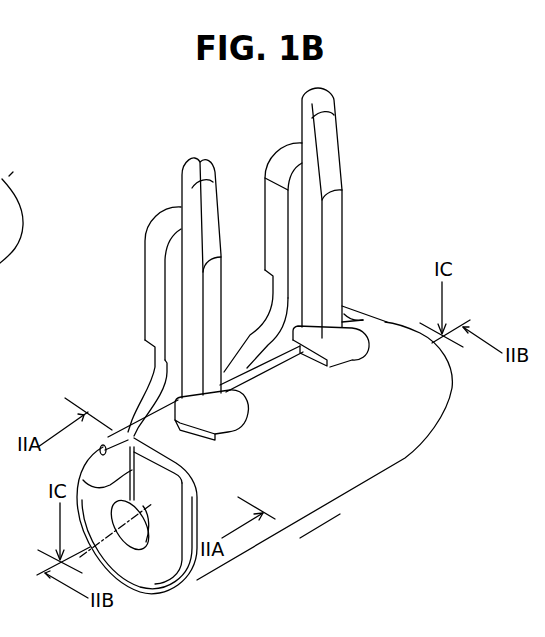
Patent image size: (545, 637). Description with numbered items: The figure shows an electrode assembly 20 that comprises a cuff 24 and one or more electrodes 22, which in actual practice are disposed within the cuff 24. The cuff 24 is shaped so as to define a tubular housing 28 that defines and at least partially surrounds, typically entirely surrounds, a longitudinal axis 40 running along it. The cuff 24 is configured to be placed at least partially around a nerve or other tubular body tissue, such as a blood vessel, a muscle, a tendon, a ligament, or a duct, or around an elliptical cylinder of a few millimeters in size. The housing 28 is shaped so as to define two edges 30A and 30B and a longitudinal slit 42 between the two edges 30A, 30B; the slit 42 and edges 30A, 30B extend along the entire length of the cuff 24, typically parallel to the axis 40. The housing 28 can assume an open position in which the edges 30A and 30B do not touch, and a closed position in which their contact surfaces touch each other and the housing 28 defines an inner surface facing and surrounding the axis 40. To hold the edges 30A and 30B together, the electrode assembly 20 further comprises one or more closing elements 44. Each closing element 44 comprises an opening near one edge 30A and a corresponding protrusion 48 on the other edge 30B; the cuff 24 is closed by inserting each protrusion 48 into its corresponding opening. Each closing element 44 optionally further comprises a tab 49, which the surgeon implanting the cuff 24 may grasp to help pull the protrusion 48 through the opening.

The electrode assembly 20 is at (131, 256).
The electrodes 22 is at (3, 295).
The cuff 24 is at (296, 540).
The tubular housing 28 is at (345, 488).
The edge 30A is at (117, 421).
The edge 30B is at (200, 468).
The longitudinal axis 40 is at (100, 538).
The longitudinal slit 42 is at (83, 480).
The closing elements 44 is at (153, 290).
The protrusion 48 is at (234, 428).
The tab 49 is at (182, 170).